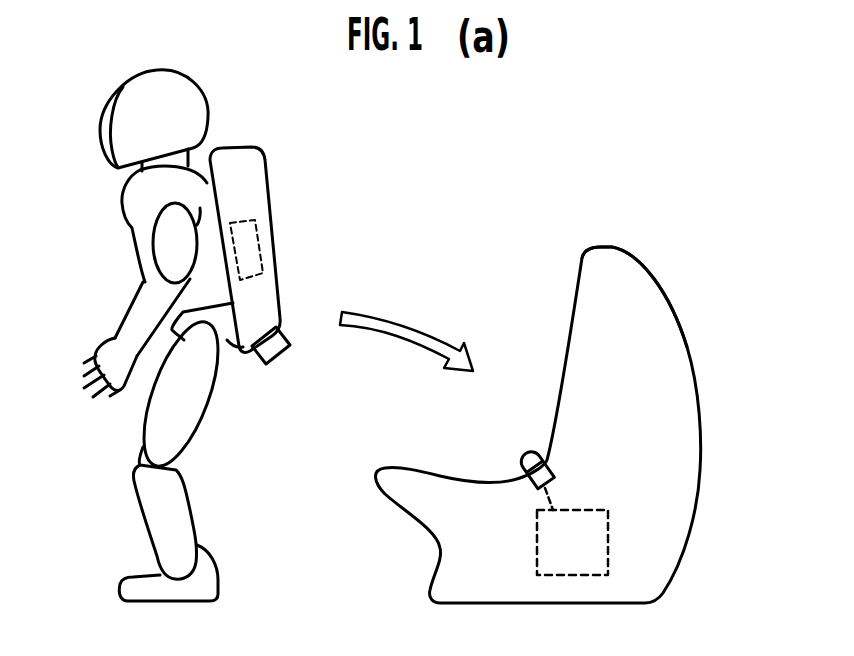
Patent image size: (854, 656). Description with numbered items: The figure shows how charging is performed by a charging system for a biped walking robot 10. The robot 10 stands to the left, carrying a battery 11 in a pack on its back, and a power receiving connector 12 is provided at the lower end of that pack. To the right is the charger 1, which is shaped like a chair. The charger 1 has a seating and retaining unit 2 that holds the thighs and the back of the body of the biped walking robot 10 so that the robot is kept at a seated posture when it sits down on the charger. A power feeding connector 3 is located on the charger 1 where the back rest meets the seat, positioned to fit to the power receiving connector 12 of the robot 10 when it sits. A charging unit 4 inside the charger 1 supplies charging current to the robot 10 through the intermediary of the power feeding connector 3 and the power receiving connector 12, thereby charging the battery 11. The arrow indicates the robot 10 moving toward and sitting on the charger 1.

The charger 1 is at (643, 244).
The seating and retaining unit 2 is at (576, 300).
The power feeding connector 3 is at (524, 457).
The charging unit 4 is at (608, 543).
The biped walking robot 10 is at (230, 97).
The battery 11 is at (260, 240).
The power receiving connector 12 is at (278, 358).